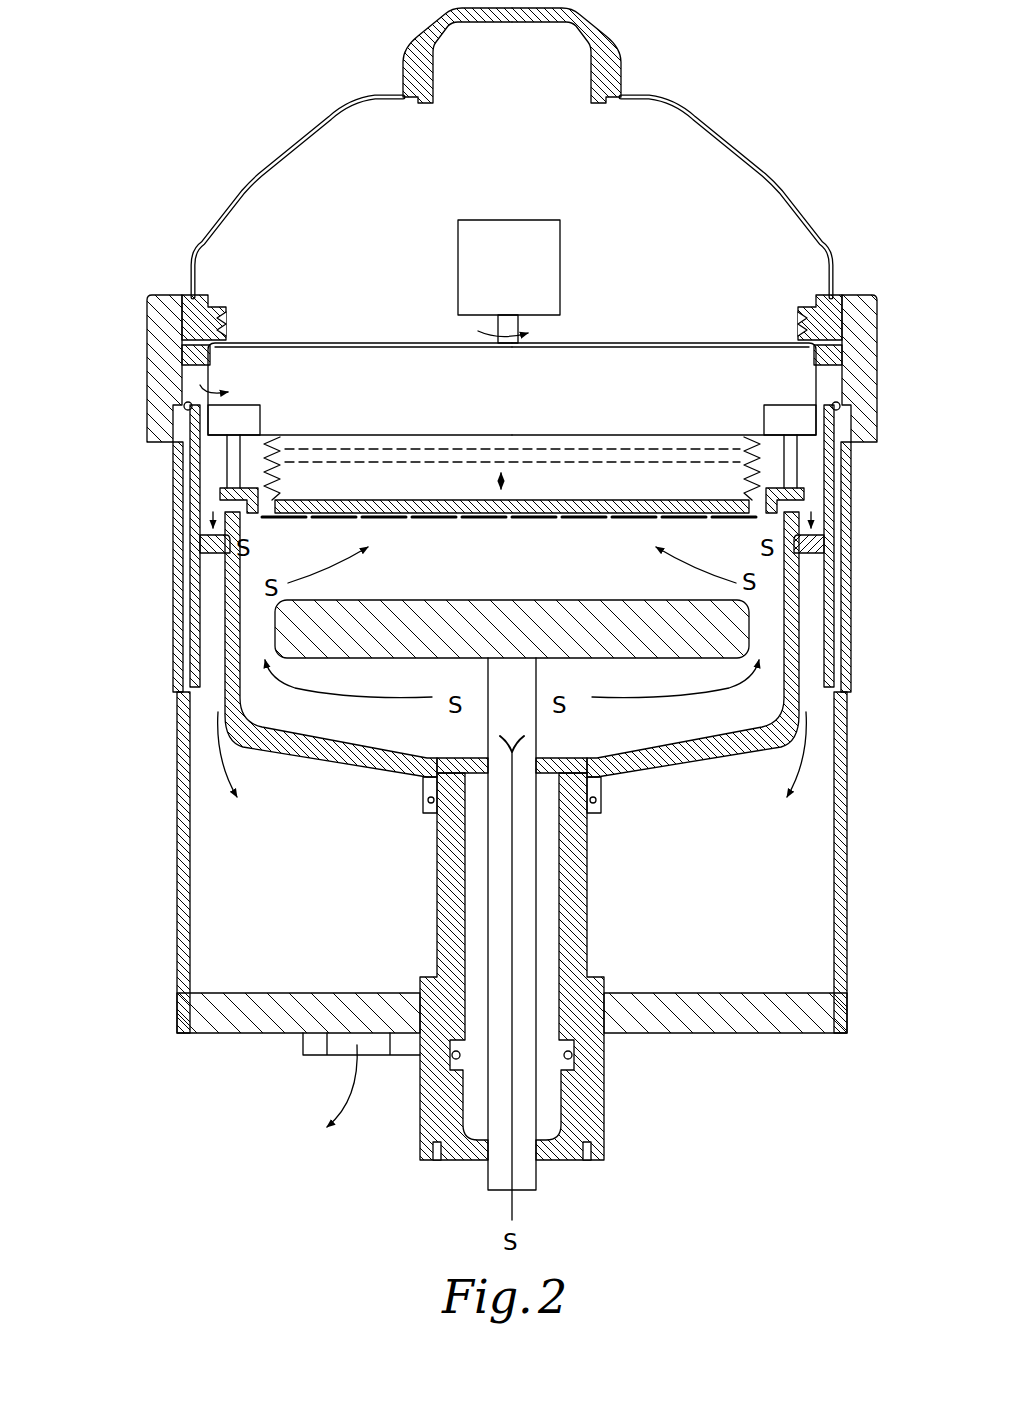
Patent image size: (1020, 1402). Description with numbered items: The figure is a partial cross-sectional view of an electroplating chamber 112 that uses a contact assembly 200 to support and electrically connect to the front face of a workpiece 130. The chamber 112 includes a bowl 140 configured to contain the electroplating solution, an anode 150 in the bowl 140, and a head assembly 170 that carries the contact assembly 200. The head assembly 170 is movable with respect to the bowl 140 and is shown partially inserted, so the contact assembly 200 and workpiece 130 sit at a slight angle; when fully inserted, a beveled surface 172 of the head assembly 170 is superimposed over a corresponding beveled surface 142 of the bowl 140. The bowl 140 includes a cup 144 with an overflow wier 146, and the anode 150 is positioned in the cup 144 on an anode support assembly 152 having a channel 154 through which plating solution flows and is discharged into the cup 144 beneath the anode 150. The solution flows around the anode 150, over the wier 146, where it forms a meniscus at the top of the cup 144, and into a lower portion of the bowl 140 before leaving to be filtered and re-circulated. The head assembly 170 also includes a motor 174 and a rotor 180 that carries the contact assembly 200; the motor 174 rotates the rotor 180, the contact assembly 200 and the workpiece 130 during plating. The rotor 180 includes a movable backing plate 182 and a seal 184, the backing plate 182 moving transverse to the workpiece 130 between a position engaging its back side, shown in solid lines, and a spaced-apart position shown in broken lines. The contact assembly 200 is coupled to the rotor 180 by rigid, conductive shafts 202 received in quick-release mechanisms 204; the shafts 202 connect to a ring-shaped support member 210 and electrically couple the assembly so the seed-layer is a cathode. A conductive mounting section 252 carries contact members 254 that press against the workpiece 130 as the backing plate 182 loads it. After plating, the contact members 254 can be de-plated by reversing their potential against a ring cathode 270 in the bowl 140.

The electroplating chamber 112 is at (104, 246).
The workpiece 130 is at (462, 520).
The bowl 140 is at (182, 700).
The beveled surface of the bowl 142 is at (200, 381).
The cup 144 is at (348, 762).
The overflow wier 146 is at (268, 487).
The anode 150 is at (505, 605).
The anode support assembly 152 is at (540, 746).
The channel 154 is at (530, 897).
The head assembly 170 is at (763, 178).
The beveled surface of the head assembly 172 is at (186, 348).
The motor 174 is at (551, 272).
The rotor 180 is at (662, 361).
The movable backing plate 182 is at (562, 500).
The seal 184 is at (290, 498).
The contact assembly 200 is at (222, 497).
The shafts 202 is at (230, 461).
The quick-release mechanisms 204 is at (250, 416).
The support member 210 is at (214, 514).
The conductive mounting section 252 is at (578, 522).
The contact members 254 is at (652, 521).
The ring cathode 270 is at (826, 541).